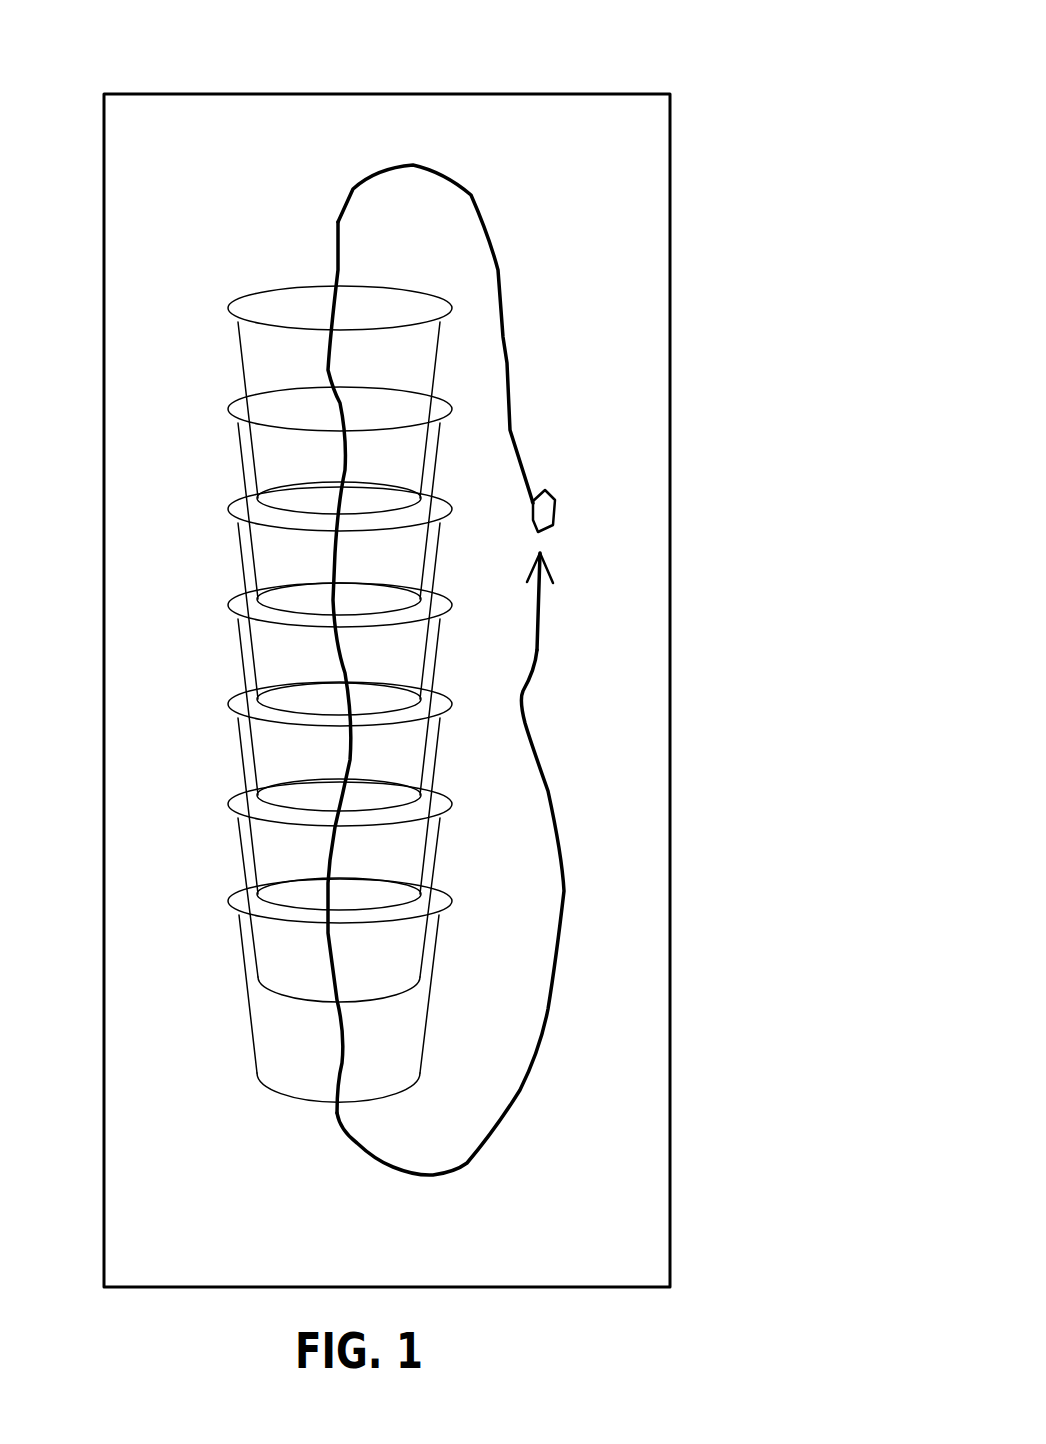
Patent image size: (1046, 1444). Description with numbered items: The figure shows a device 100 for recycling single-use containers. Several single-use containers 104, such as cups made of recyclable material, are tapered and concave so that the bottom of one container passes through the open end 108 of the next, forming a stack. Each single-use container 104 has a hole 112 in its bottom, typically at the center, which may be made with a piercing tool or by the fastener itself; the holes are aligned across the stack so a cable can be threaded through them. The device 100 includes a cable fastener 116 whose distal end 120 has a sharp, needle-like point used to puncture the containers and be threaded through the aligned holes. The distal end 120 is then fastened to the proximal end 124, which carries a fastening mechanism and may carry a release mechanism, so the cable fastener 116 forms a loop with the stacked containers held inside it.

The device 100 is at (481, 111).
The single-use container 104 is at (239, 647).
The open end 108 is at (310, 287).
The hole 112 is at (333, 515).
The cable fastener 116 is at (463, 670).
The distal end 120 is at (543, 565).
The proximal end 124 is at (555, 498).